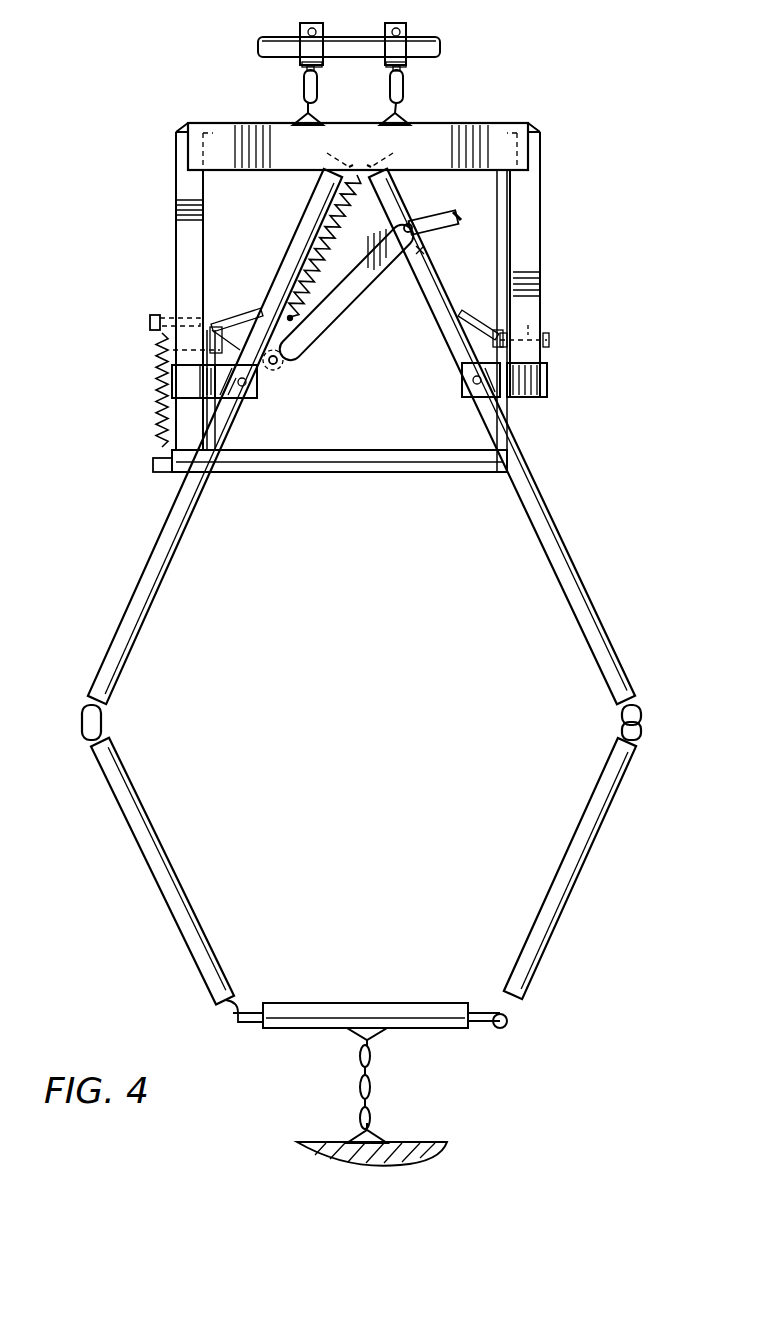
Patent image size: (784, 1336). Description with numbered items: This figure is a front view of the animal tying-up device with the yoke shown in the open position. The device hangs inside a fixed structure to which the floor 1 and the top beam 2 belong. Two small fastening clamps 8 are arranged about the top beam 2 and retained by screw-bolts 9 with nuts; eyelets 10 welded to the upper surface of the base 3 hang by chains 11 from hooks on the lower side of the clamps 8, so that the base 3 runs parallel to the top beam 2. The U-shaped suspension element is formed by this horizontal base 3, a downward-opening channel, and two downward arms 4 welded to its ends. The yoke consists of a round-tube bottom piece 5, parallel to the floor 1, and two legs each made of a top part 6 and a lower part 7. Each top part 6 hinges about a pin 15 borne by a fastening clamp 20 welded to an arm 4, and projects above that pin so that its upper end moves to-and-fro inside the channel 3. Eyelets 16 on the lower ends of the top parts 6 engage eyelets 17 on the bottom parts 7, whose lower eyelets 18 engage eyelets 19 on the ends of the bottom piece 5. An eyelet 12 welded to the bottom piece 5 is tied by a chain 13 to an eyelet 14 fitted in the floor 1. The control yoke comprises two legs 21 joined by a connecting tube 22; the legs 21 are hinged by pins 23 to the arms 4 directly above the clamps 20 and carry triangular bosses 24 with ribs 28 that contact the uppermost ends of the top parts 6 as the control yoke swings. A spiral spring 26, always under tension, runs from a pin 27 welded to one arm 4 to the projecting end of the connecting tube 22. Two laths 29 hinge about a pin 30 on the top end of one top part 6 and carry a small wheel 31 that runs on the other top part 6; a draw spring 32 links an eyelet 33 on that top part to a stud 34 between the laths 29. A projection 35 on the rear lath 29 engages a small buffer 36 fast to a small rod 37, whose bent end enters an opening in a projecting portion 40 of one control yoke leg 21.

The floor 1 is at (310, 1142).
The top beam 2 is at (275, 40).
The base 3 is at (447, 150).
The arm 4 is at (540, 160).
The bottom piece 5 is at (305, 1005).
The top part 6 is at (557, 542).
The lower part 7 is at (585, 876).
The small fastening clamp 8 is at (398, 31).
The screw-bolt 9 is at (314, 31).
The eyelet 10 is at (403, 105).
The chain 11 is at (305, 84).
The eyelet 12 is at (355, 1035).
The chain 13 is at (372, 1056).
The eyelet 14 is at (378, 1138).
The pin 15 is at (472, 381).
The eyelet 16 is at (637, 708).
The eyelet 17 is at (640, 738).
The eyelet 18 is at (507, 1028).
The eyelet 19 is at (485, 1022).
The fastening clamp 20 is at (175, 386).
The leg 21 is at (215, 405).
The connecting tube 22 is at (345, 452).
The pin 23 is at (534, 334).
The boss 24 is at (245, 312).
The spiral spring 26 is at (156, 376).
The pin 27 is at (150, 321).
The rib 28 is at (218, 327).
The lath 29 is at (365, 255).
The pin 30 is at (412, 226).
The small wheel 31 is at (283, 363).
The draw spring 32 is at (313, 207).
The eyelet 33 is at (348, 140).
The stud 34 is at (295, 320).
The projection 35 is at (457, 217).
The small buffer 36 is at (507, 223).
The small rod 37 is at (507, 258).
The projecting portion 40 is at (495, 333).